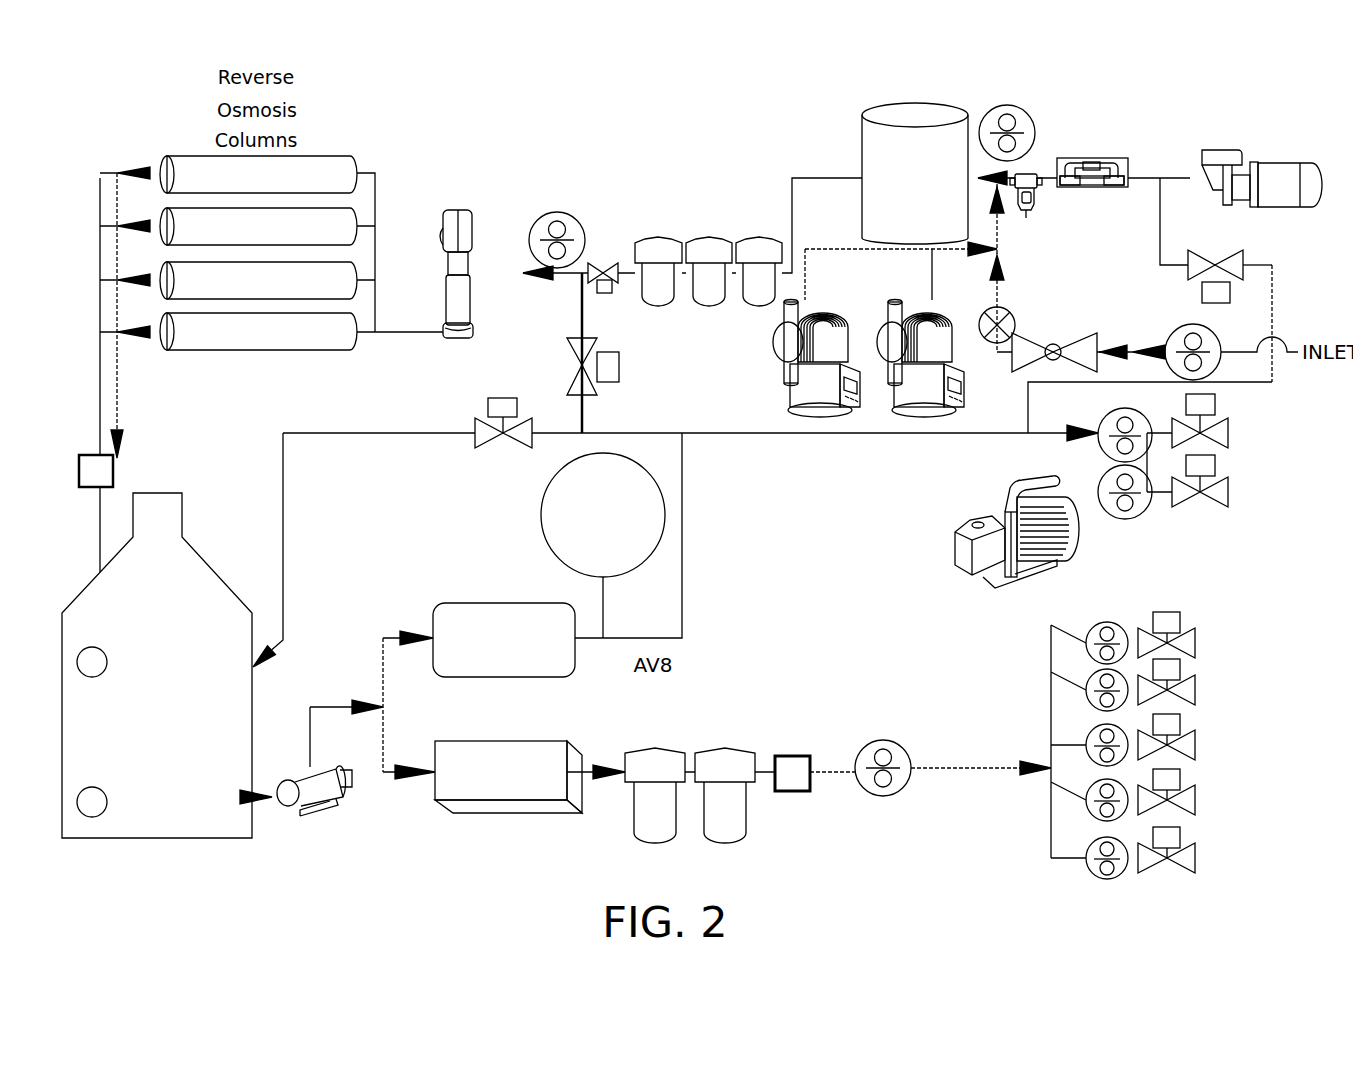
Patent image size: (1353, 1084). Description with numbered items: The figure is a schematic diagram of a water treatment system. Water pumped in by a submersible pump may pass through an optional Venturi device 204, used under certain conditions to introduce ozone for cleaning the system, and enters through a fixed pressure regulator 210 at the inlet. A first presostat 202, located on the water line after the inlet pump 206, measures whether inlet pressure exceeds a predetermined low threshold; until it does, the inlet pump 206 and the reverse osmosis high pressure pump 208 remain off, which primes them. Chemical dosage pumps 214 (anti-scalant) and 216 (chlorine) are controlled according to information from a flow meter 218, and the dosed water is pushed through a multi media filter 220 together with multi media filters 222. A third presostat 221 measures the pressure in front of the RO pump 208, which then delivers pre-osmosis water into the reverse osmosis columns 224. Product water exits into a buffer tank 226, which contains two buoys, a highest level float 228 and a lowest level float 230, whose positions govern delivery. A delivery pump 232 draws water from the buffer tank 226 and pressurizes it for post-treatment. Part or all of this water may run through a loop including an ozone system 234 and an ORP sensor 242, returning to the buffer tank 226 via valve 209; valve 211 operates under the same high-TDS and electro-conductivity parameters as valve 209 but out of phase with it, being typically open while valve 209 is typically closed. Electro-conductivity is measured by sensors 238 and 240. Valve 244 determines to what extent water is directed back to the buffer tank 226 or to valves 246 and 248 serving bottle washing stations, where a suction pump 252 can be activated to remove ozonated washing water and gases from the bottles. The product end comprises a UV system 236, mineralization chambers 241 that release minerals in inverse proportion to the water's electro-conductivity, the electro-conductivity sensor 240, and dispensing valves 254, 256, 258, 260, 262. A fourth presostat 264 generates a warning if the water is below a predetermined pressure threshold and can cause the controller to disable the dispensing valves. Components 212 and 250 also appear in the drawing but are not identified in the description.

The first presostat 202 is at (1188, 323).
The Venturi device 204 is at (1067, 187).
The inlet pump 206 is at (1288, 163).
The RO high pressure pump 208 is at (465, 208).
The valve 209 is at (578, 357).
The fixed pressure regulator 210 is at (1077, 343).
The valve 211 is at (601, 266).
The pump 212 is at (1030, 110).
The anti-scalant chemical dosage pump 214 is at (777, 393).
The chlorine chemical dosage pump 216 is at (883, 315).
The flow meter 218 is at (1026, 222).
The multi media filter 220 is at (915, 173).
The third presostat 221 is at (582, 220).
The multi media filters 222 is at (667, 235).
The reverse osmosis columns 224 is at (200, 350).
The buffer tank 226 is at (218, 572).
The highest level float 228 is at (107, 662).
The lowest level float 230 is at (107, 802).
The delivery pump 232 is at (314, 810).
The ozone system 234 is at (473, 602).
The UV system 236 is at (460, 813).
The electro-conductivity sensor 238 is at (113, 472).
The electro-conductivity sensor 240 is at (793, 756).
The mineralization chambers 241 is at (712, 750).
The ORP sensor 242 is at (542, 526).
The valve 244 is at (485, 440).
The valve 246 is at (1230, 431).
The valve 248 is at (1230, 494).
The valve 250 is at (1235, 252).
The suction pump 252 is at (953, 548).
The dispensing valve 254 is at (1195, 647).
The dispensing valve 256 is at (1195, 694).
The dispensing valve 258 is at (1195, 749).
The dispensing valve 260 is at (1195, 804).
The dispensing valve 262 is at (1195, 862).
The fourth presostat 264 is at (878, 796).